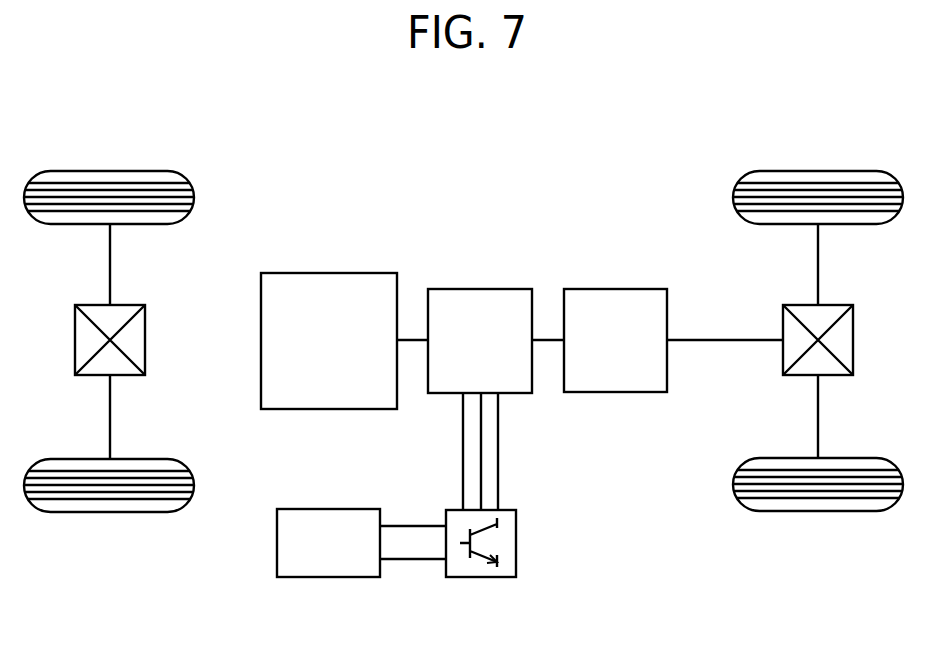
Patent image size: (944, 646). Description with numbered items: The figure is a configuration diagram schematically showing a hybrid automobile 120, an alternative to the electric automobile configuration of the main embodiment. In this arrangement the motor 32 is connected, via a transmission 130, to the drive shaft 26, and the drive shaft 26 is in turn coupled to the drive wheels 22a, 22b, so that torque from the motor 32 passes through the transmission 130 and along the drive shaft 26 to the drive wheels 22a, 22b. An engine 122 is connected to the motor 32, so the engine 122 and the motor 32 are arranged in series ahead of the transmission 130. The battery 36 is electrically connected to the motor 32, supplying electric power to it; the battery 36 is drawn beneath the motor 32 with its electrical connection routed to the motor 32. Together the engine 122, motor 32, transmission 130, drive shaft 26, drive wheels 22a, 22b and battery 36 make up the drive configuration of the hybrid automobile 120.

The hybrid automobile 120 is at (549, 152).
The engine 122 is at (329, 271).
The motor 32 is at (481, 288).
The transmission 130 is at (615, 288).
The drive shaft 26 is at (718, 337).
The drive wheel 22a is at (820, 170).
The drive wheel 22b is at (820, 513).
The battery 36 is at (330, 508).